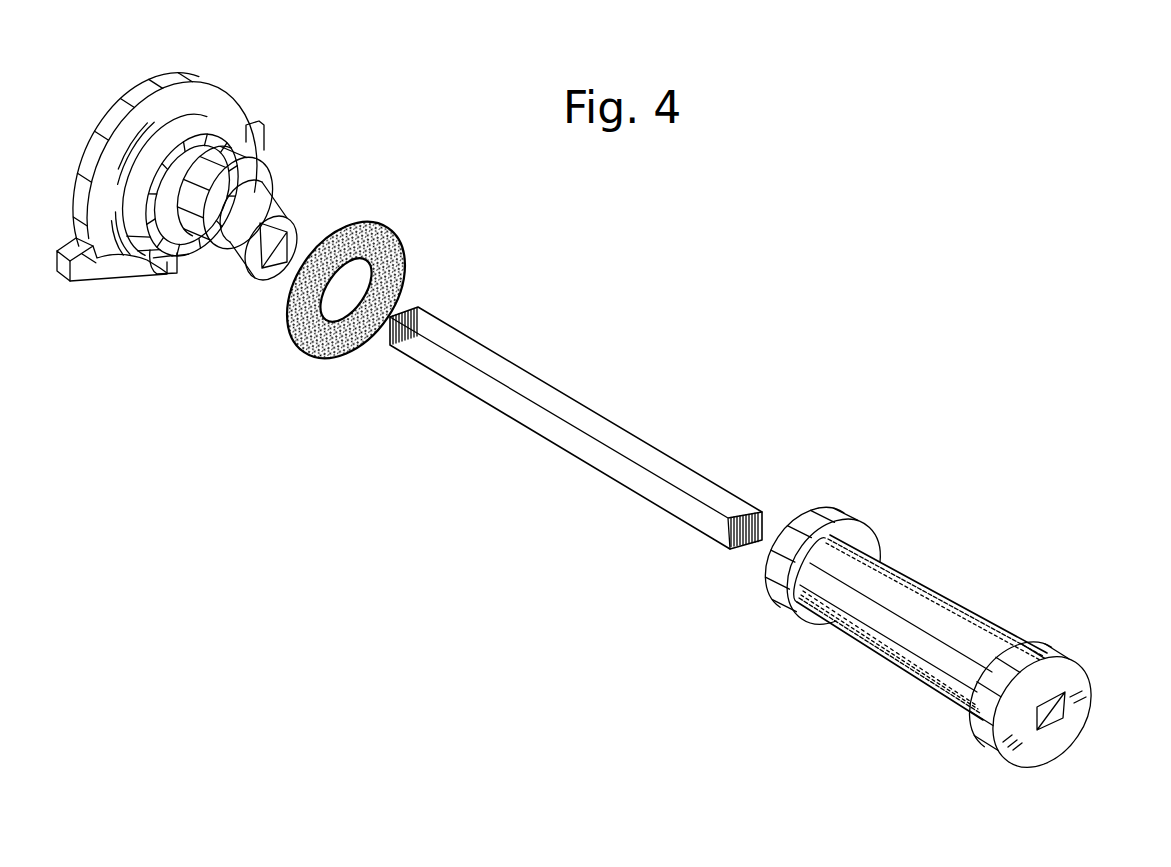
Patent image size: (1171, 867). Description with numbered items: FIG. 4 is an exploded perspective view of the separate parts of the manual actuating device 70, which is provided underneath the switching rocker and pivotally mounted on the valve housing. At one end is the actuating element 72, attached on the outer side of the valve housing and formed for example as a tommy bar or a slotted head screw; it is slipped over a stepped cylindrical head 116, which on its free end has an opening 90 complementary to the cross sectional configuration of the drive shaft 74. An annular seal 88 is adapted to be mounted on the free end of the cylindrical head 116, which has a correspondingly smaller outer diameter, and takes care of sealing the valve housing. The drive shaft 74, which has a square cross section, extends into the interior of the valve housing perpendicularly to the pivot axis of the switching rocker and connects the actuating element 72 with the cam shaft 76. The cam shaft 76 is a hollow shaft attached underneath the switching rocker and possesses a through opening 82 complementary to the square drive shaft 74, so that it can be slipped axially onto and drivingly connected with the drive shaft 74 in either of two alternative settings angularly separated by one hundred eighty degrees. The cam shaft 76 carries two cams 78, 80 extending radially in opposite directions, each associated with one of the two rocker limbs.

The manual actuating device 70 is at (626, 380).
The actuating element 72 is at (219, 102).
The drive shaft 74 is at (528, 413).
The cam shaft 76 is at (940, 620).
The cam 78 is at (885, 542).
The cam 80 is at (1007, 747).
The through opening 82 is at (1068, 704).
The annular seal 88 is at (394, 246).
The opening 90 is at (287, 233).
The cylindrical head 116 is at (176, 264).